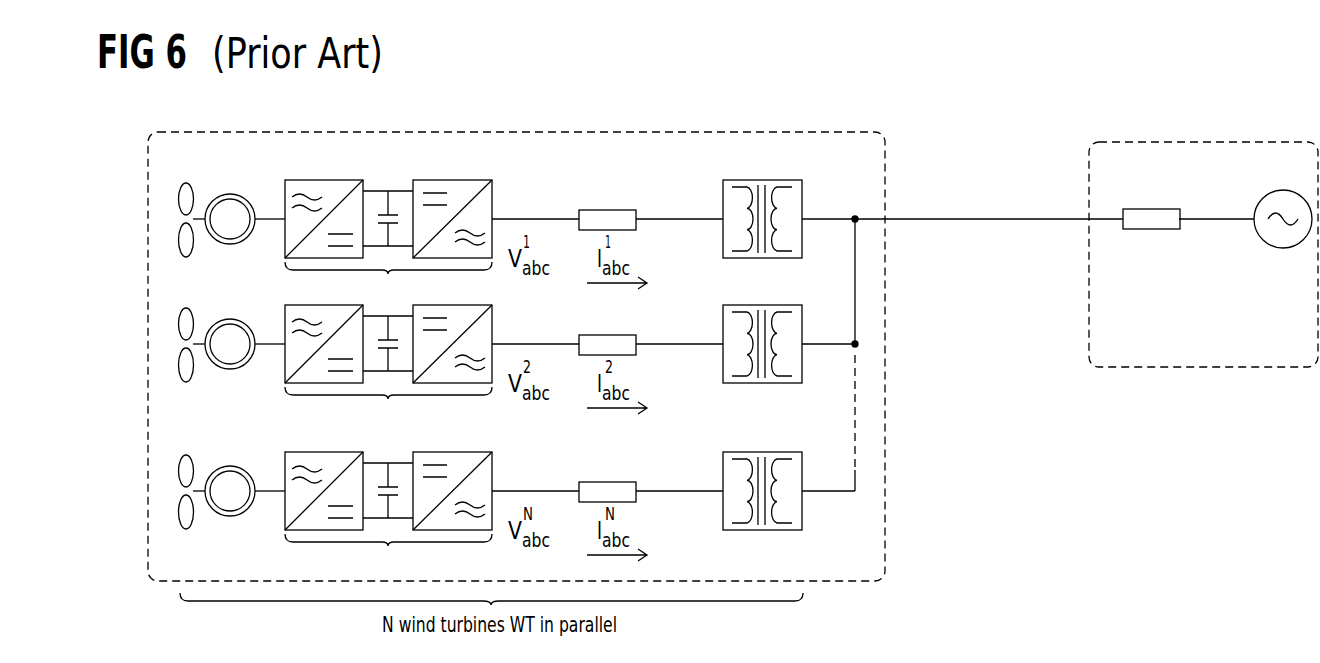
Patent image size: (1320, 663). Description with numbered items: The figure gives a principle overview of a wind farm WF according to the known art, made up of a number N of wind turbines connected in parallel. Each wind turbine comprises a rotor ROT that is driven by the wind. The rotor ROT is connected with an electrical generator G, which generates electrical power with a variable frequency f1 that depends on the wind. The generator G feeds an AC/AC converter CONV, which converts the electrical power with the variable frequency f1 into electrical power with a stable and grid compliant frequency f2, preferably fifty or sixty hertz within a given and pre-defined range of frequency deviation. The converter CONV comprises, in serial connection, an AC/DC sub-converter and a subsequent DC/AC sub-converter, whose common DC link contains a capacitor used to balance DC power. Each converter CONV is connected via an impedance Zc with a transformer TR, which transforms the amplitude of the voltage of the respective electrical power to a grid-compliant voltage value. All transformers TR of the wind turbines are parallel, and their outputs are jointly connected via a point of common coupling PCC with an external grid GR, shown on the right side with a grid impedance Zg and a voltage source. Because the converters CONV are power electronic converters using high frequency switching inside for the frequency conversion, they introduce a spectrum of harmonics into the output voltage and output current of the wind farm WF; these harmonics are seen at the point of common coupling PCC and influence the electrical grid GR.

The rotor ROT is at (187, 342).
The electrical generator G is at (230, 355).
The variable frequency f1 is at (270, 322).
The AC/AC converter CONV is at (388, 375).
The grid compliant frequency f2 is at (535, 331).
The impedance Zc is at (607, 339).
The transformer TR is at (745, 340).
The point of common coupling PCC is at (855, 340).
The wind farm WF is at (516, 356).
The external grid GR is at (1086, 240).
The grid impedance Zg is at (1151, 200).